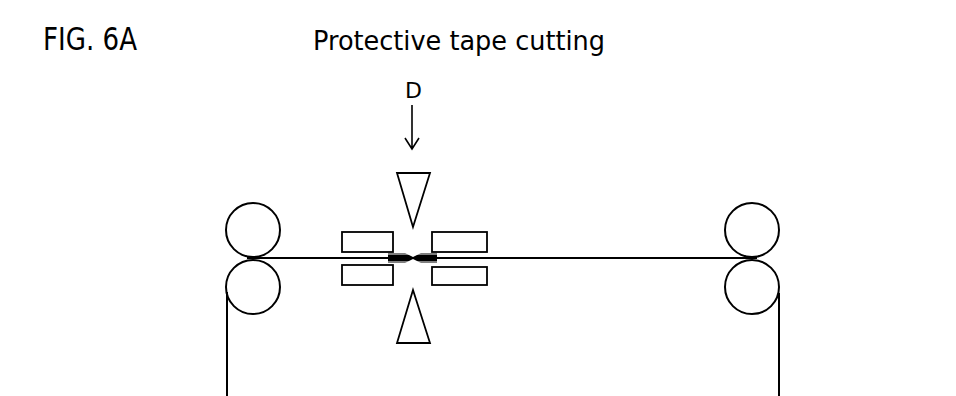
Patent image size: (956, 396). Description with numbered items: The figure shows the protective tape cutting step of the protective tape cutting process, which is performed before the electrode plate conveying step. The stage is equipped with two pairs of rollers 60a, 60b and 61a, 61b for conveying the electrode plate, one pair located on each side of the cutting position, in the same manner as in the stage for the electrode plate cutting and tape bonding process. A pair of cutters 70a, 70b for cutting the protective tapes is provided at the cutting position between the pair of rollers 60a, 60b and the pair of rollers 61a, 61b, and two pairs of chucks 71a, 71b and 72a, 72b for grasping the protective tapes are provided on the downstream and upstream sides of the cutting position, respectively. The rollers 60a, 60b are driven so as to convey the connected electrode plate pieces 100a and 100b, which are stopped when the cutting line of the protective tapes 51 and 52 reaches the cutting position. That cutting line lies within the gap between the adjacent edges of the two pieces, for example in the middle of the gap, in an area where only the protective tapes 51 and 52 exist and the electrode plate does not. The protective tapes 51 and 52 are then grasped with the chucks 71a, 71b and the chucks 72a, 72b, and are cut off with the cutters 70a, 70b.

The electrode plate piece 100a is at (313, 238).
The electrode plate piece 100b is at (654, 250).
The roller 60a is at (230, 214).
The roller 60b is at (227, 280).
The roller 61a is at (766, 220).
The roller 61b is at (766, 273).
The chuck 71a is at (355, 231).
The chuck 71b is at (355, 286).
The chuck 72a is at (482, 232).
The chuck 72b is at (480, 285).
The protective tape 51 is at (418, 252).
The protective tape 52 is at (415, 265).
The cutter 70a is at (420, 173).
The cutter 70b is at (415, 345).